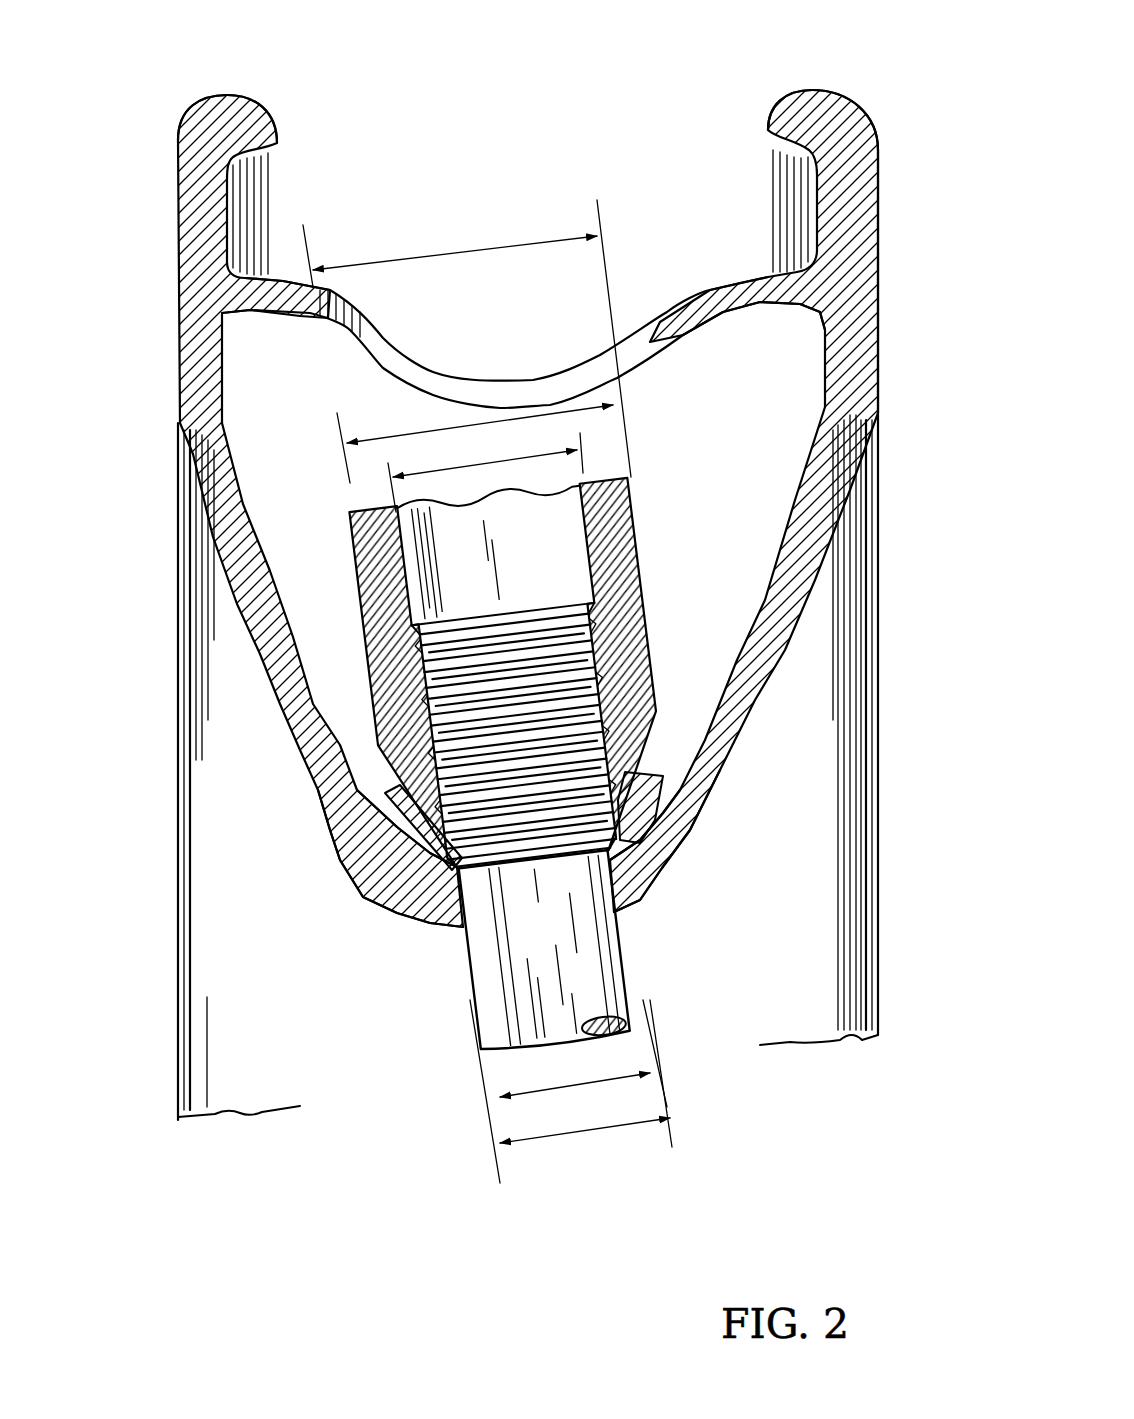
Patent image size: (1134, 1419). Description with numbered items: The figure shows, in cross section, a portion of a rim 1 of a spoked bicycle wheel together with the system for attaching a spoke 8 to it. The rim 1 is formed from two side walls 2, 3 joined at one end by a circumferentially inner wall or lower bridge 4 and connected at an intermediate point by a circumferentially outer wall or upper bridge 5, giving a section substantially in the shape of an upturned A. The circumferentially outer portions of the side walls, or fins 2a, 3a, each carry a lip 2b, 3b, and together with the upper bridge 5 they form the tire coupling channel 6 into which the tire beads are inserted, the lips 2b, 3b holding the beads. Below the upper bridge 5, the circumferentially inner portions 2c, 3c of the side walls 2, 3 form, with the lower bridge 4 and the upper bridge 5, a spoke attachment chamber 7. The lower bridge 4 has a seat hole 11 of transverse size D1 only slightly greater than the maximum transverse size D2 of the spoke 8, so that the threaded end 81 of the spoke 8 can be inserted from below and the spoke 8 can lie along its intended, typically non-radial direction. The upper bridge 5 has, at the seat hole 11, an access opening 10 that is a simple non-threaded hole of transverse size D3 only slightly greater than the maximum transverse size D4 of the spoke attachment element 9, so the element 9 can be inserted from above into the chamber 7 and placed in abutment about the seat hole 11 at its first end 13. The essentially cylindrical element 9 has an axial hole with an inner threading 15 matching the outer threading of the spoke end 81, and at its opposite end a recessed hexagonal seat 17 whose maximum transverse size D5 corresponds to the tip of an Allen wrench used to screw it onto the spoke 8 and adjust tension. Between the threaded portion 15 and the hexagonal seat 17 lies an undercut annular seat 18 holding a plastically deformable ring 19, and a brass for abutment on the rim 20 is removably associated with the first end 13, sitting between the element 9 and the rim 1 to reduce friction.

The rim 1 is at (534, 560).
The side wall 2 is at (273, 567).
The fin 2a is at (205, 200).
The lip 2b is at (228, 127).
The circumferentially inner portion of the side wall 2c is at (288, 710).
The side wall 3 is at (797, 522).
The fin 3a is at (850, 212).
The lip 3b is at (825, 105).
The circumferentially inner portion of the side wall 3c is at (760, 698).
The lower bridge 4 is at (650, 860).
The upper bridge 5 is at (523, 315).
The tire coupling channel 6 is at (534, 591).
The spoke attachment chamber 7 is at (764, 402).
The spoke 8 is at (497, 983).
The spoke attachment element 9 is at (552, 651).
The access opening 10 is at (507, 380).
The seat hole 11 is at (640, 933).
The first end 13 is at (357, 863).
The inner threading 15 is at (627, 697).
The recessed hexagonal seat 17 is at (570, 541).
The undercut annular seat 18 is at (620, 652).
The plastically deformable ring 19 is at (613, 617).
The brass for abutment on the rim 20 is at (413, 883).
The end of the spoke 81 is at (600, 720).
The transverse size of the seat hole D1 is at (538, 1138).
The maximum transverse size of the spoke D2 is at (535, 1083).
The transverse size of the access opening D3 is at (402, 283).
The maximum transverse size of the spoke attachment element D4 is at (413, 445).
The maximum transverse size of the recessed hexagonal seat D5 is at (532, 465).